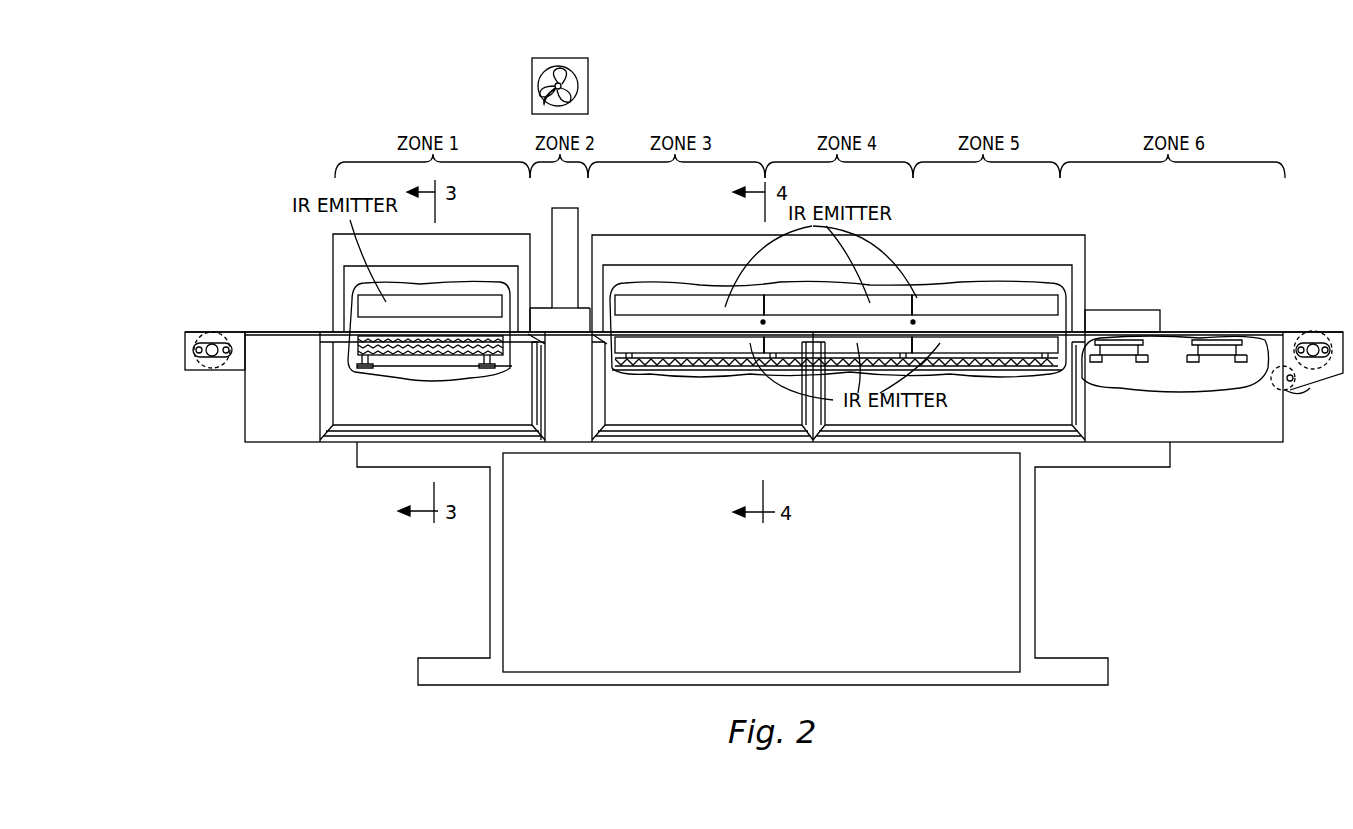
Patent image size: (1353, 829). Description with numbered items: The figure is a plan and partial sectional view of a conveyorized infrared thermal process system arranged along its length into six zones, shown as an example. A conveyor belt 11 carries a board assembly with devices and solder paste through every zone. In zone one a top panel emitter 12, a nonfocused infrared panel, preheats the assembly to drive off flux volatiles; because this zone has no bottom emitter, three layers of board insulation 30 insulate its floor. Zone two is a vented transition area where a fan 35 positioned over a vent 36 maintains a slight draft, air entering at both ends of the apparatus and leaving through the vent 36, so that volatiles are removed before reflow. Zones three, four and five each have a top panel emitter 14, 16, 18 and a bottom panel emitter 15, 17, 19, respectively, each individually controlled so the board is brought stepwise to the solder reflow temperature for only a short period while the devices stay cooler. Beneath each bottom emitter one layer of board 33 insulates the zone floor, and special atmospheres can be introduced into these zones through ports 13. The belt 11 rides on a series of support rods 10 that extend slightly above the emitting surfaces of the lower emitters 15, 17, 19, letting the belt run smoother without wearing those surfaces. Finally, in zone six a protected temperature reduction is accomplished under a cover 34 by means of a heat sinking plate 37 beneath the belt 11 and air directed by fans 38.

The support rods 10 is at (670, 328).
The belt 11 is at (248, 330).
The top panel emitter 12 is at (429, 331).
The ports 13 is at (765, 322).
The top panel emitter 14 is at (689, 304).
The bottom panel emitter 15 is at (689, 344).
The top panel emitter 16 is at (838, 304).
The bottom panel emitter 17 is at (838, 344).
The top panel emitter 18 is at (985, 304).
The bottom panel emitter 19 is at (985, 344).
The board insulation 30 is at (447, 355).
The board 33 is at (713, 366).
The cover 34 is at (1118, 322).
The fan 35 is at (586, 68).
The vent 36 is at (576, 263).
The heat sinking plate 37 is at (1245, 332).
The fans 38 is at (1118, 357).